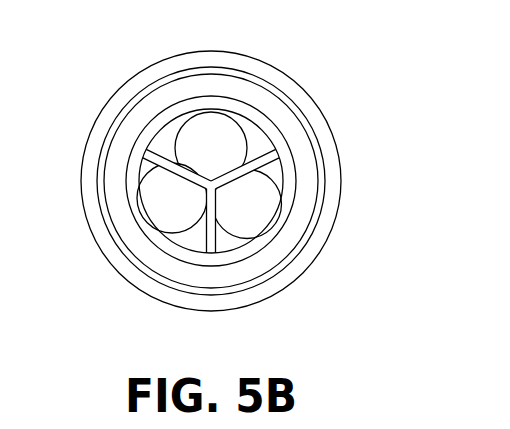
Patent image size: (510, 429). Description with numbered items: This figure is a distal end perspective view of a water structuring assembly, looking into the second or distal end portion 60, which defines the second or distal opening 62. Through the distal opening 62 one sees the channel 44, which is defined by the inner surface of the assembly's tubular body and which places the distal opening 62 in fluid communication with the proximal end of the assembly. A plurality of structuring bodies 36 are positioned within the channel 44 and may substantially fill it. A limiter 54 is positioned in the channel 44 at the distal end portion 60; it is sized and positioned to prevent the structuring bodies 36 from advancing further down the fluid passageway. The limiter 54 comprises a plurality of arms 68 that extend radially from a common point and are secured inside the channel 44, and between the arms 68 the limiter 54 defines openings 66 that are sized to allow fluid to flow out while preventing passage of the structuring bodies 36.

The distal end portion 60 is at (78, 137).
The distal opening 62 is at (267, 258).
The channel 44 is at (140, 165).
The structuring bodies 36 is at (223, 123).
The limiter 54 is at (213, 181).
The openings 66 is at (170, 132).
The arms 68 is at (255, 158).